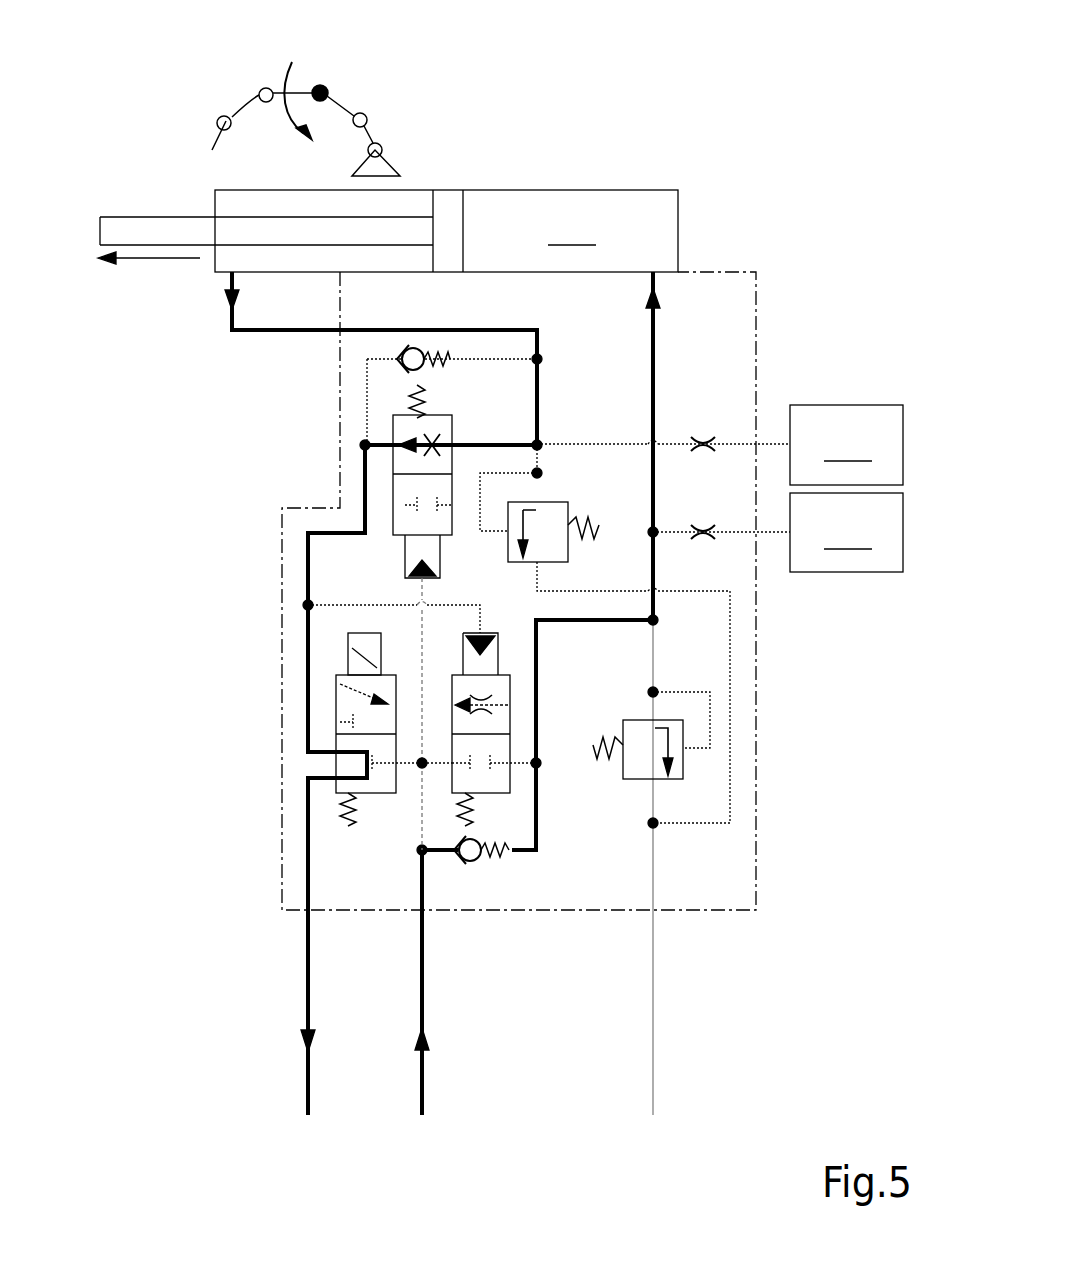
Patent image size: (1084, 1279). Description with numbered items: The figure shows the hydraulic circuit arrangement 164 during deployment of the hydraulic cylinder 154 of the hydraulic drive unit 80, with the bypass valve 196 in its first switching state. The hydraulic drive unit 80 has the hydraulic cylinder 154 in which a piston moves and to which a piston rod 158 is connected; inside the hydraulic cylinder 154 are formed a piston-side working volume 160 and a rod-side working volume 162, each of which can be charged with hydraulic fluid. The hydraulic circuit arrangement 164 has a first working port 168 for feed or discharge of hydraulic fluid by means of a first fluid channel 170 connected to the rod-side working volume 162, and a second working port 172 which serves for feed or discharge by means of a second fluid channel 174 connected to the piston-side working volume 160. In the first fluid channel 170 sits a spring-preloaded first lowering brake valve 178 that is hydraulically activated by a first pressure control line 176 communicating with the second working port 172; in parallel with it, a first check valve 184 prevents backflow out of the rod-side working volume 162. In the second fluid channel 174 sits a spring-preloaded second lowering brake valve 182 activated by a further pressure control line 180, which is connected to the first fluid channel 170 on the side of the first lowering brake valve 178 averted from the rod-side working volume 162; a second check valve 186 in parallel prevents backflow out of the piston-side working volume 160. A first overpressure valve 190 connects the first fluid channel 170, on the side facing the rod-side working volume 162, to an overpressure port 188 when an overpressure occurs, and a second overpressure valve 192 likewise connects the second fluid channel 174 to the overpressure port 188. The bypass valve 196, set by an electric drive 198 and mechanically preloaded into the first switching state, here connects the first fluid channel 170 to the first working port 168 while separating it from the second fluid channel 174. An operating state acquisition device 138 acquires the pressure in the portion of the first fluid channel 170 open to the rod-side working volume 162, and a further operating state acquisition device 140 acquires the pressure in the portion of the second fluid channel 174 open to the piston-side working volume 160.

The hydraulic drive unit 80 is at (716, 88).
The operating state acquisition device 138 is at (720, 445).
The further operating state acquisition device 140 is at (778, 532).
The hydraulic cylinder 154 is at (553, 190).
The piston rod 158 is at (136, 216).
The piston-side working volume 160 is at (514, 231).
The rod-side working volume 162 is at (413, 201).
The hydraulic circuit arrangement 164 is at (758, 893).
The first working port 168 is at (304, 912).
The first fluid channel 170 is at (362, 331).
The second working port 172 is at (424, 912).
The second fluid channel 174 is at (655, 364).
The first pressure control line 176 is at (430, 592).
The first lowering brake valve 178 is at (392, 430).
The further pressure control line 180 is at (342, 604).
The second lowering brake valve 182 is at (510, 690).
The first check valve 184 is at (421, 343).
The second check valve 186 is at (477, 860).
The overpressure port 188 is at (653, 910).
The first overpressure valve 190 is at (553, 502).
The second overpressure valve 192 is at (635, 779).
The bypass valve 196 is at (336, 706).
The electric drive 198 is at (343, 633).